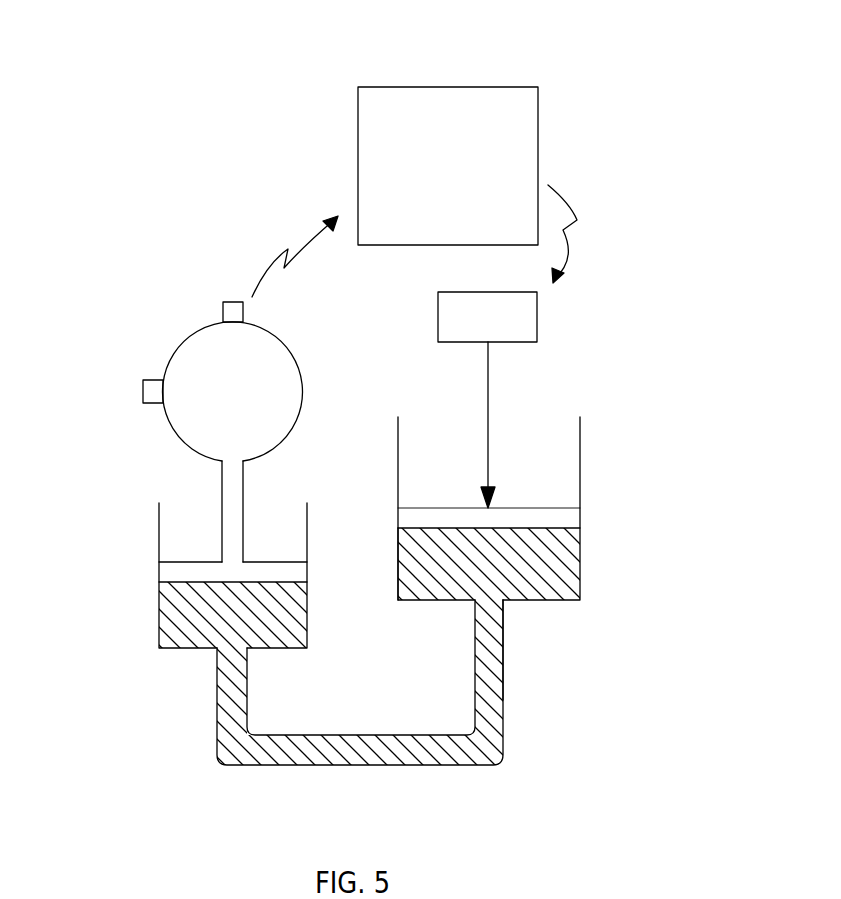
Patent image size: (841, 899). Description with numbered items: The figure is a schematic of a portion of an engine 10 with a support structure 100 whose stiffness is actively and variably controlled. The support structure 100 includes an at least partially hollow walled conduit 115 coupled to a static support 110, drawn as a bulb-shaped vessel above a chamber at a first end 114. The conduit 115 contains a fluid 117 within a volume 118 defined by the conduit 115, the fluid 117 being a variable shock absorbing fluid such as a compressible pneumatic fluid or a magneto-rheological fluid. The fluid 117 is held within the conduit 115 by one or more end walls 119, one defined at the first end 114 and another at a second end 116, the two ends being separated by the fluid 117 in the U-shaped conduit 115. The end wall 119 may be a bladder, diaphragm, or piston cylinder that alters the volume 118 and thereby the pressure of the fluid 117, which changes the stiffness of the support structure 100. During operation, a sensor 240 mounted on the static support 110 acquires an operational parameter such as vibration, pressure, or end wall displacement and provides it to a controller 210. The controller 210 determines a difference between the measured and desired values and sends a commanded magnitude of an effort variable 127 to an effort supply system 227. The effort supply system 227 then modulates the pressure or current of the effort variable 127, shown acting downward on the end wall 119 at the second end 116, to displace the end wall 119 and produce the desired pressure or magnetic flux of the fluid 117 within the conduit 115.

The engine 10 is at (318, 73).
The support structure 100 is at (598, 329).
The static support 110 is at (268, 433).
The first end 114 is at (153, 562).
The conduit 115 is at (355, 730).
The second end 116 is at (566, 529).
The fluid 117 is at (524, 575).
The volume 118 is at (410, 573).
The end wall 119 is at (188, 585).
The effort variable 127 is at (490, 403).
The controller 210 is at (465, 183).
The effort supply system 227 is at (505, 330).
The sensor 240 is at (232, 313).